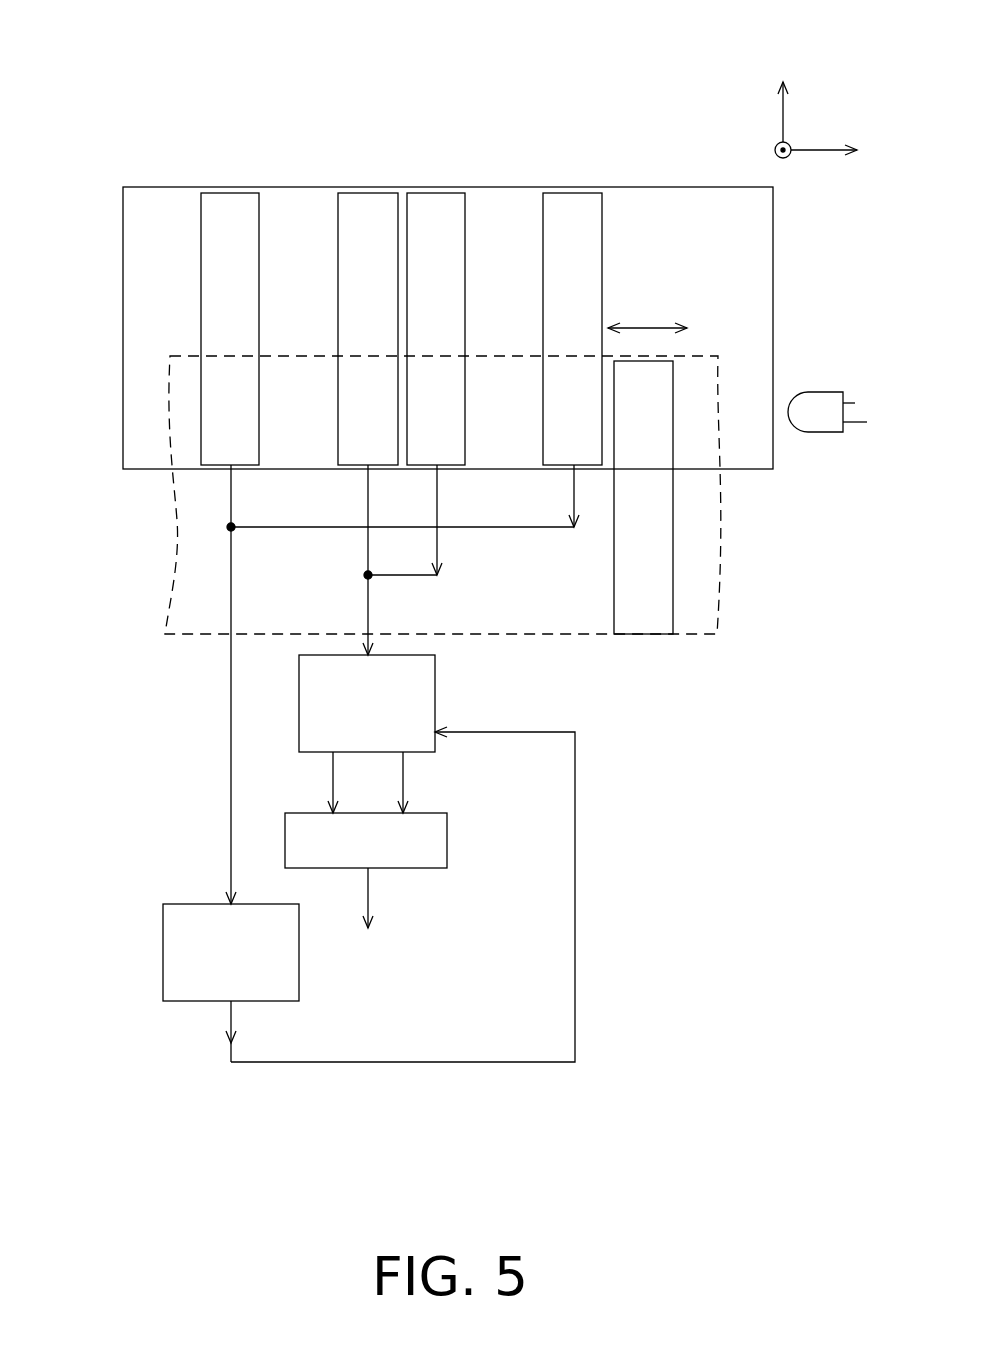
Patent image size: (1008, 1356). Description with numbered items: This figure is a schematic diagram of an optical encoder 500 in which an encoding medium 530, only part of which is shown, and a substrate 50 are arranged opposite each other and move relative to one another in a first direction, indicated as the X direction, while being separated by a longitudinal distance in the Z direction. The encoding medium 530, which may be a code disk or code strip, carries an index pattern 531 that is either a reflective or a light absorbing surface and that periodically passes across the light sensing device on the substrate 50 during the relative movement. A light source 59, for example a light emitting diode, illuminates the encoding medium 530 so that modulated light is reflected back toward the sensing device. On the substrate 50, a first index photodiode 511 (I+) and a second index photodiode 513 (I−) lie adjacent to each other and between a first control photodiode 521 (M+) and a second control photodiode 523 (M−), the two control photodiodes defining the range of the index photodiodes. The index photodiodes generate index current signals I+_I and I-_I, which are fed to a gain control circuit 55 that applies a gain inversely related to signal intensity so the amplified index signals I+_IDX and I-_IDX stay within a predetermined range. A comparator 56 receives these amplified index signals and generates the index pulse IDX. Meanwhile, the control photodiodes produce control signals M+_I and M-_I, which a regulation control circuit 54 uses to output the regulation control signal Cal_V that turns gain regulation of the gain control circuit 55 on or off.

The optical encoder 500 is at (93, 43).
The substrate 50 is at (716, 190).
The first control photodiode 521 is at (226, 192).
The first index photodiode 511 is at (370, 192).
The second index photodiode 513 is at (433, 192).
The second control photodiode 523 is at (565, 192).
The encoding medium 530 is at (722, 575).
The index pattern 531 is at (640, 622).
The light source 59 is at (815, 398).
The gain control circuit 55 is at (435, 701).
The comparator 56 is at (447, 838).
The regulation control circuit 54 is at (163, 947).